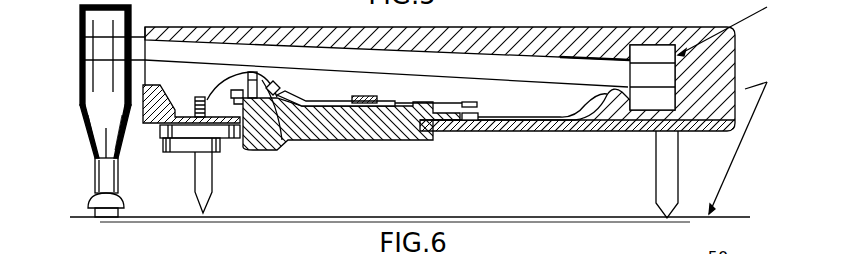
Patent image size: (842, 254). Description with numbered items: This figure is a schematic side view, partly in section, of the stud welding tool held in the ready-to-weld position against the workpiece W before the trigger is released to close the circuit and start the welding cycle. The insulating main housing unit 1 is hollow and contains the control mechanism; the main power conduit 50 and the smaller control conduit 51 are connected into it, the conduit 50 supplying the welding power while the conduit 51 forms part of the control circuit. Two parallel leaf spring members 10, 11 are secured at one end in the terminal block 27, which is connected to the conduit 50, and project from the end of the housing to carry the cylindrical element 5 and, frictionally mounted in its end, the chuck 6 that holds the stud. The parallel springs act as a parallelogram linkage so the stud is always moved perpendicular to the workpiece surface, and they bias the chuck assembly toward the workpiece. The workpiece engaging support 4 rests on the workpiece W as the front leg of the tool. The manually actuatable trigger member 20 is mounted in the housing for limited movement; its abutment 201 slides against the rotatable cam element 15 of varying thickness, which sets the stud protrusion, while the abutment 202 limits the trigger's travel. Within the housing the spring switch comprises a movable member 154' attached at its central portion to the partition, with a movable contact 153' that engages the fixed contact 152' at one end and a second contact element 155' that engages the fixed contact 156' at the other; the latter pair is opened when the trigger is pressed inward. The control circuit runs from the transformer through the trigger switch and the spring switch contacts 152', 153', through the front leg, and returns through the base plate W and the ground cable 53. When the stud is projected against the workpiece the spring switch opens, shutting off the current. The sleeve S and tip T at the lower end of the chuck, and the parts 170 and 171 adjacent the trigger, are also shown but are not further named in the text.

The main housing unit 1 is at (618, 40).
The workpiece engaging support 4 is at (672, 185).
The cylindrical element 5 is at (82, 85).
The chuck 6 is at (84, 120).
The sleeve S is at (96, 178).
The tool tip T is at (86, 201).
The leaf spring member 10 is at (180, 62).
The leaf spring member 11 is at (205, 40).
The cam element 15 is at (172, 152).
The trigger member 20 is at (367, 123).
The terminal block 27 is at (652, 55).
The main power conduit 50 is at (752, 17).
The control conduit 51 is at (748, 88).
The ground cable 53 is at (748, 130).
The workpiece W is at (447, 217).
The fixed contact 152' is at (330, 89).
The movable contact 153' is at (276, 142).
The movable member 154' is at (359, 77).
The second contact element 155' is at (496, 97).
The fixed contact 156' is at (495, 135).
The lever 170 is at (292, 72).
The pin 171 is at (252, 72).
The abutment 201 is at (243, 138).
The abutment 202 is at (242, 84).